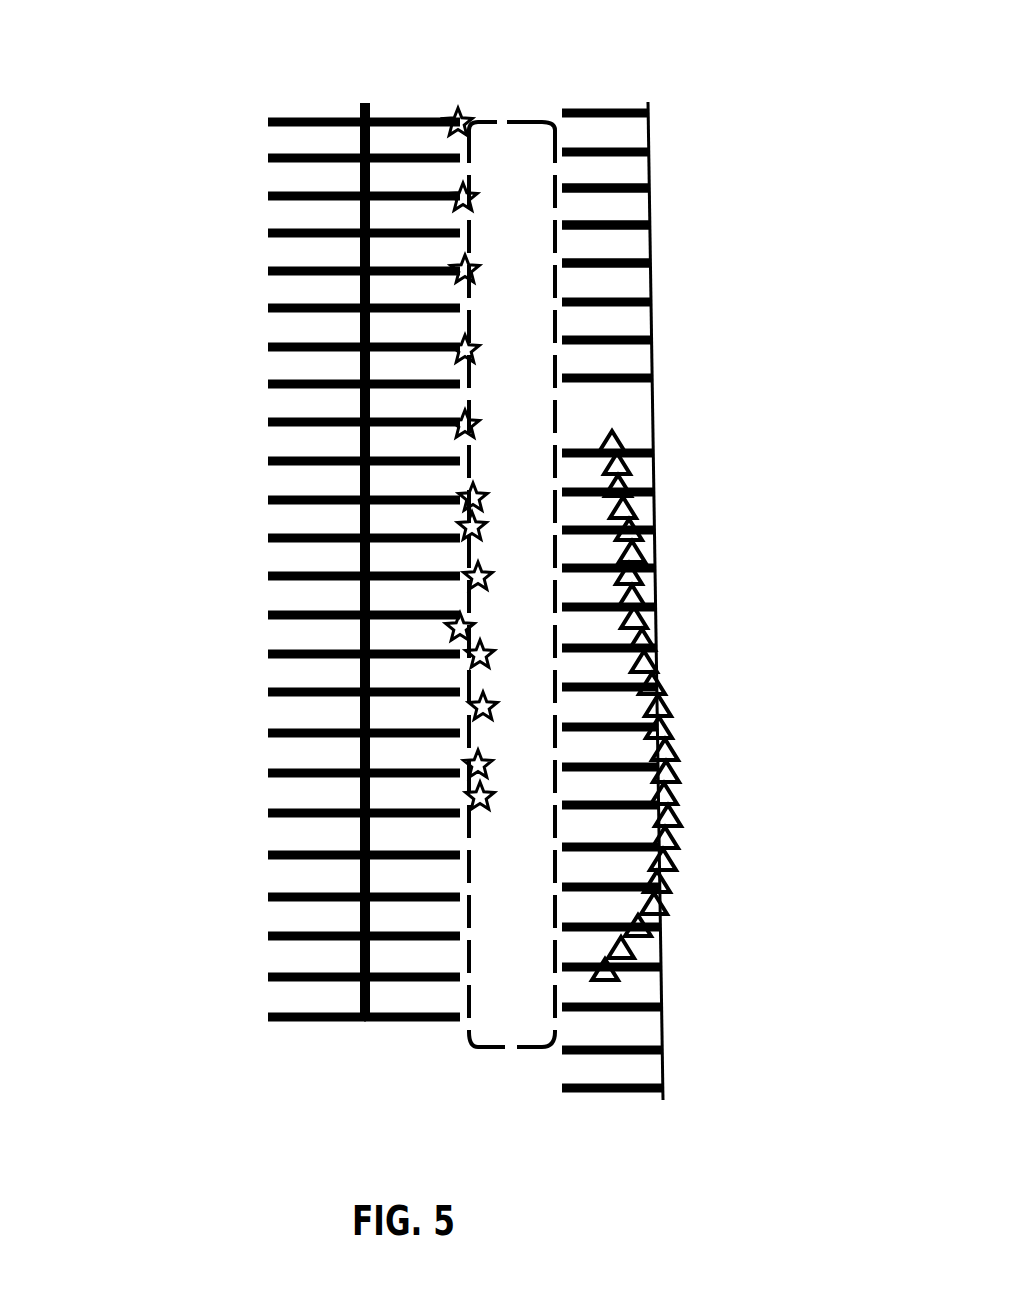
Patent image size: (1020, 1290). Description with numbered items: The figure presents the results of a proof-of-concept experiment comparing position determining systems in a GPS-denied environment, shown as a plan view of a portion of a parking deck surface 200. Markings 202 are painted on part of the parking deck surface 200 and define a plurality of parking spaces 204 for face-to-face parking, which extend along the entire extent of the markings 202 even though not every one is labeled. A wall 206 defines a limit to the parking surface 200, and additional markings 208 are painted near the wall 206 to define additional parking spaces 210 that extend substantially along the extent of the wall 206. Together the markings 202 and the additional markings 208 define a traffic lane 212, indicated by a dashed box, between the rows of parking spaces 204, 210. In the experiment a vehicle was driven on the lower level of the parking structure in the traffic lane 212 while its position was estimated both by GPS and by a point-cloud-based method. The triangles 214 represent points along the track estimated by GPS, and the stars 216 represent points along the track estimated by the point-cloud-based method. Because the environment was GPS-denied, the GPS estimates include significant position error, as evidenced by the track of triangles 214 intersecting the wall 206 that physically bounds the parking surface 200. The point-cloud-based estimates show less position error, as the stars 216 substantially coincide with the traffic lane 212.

The parking deck surface 200 is at (325, 74).
The markings 202 is at (268, 274).
The parking spaces 204 is at (405, 397).
The wall 206 is at (650, 398).
The additional markings 208 is at (598, 118).
The additional parking spaces 210 is at (612, 245).
The traffic lane 212 is at (476, 1047).
The triangles 214 is at (650, 512).
The stars 216 is at (445, 205).